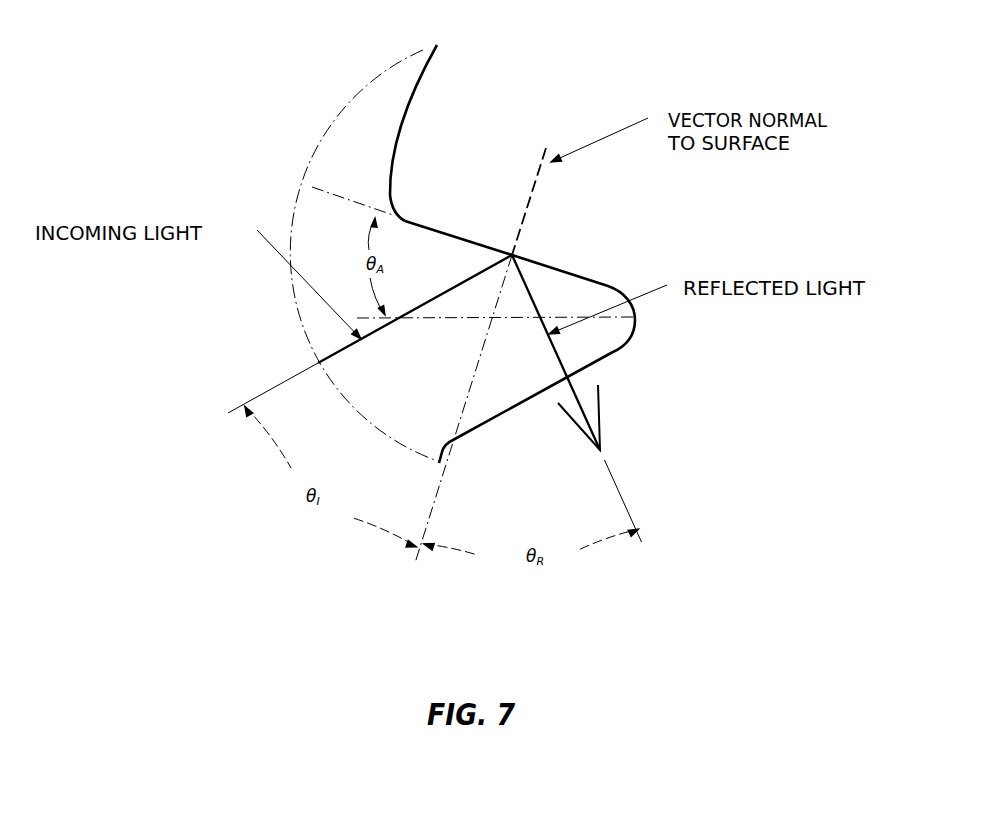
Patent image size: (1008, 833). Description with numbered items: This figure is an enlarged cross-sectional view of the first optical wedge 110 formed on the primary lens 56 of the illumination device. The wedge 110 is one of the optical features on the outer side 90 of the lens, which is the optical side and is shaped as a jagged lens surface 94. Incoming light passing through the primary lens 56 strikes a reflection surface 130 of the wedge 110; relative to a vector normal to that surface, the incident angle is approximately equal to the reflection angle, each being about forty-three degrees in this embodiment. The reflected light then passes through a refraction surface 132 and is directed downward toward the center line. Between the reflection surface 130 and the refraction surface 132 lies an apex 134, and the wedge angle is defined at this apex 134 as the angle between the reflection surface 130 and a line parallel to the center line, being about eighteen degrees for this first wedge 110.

The primary lens 56 is at (383, 136).
The outer side 90 is at (460, 234).
The jagged lens surface 94 is at (499, 249).
The optical wedge 110 is at (632, 225).
The reflection surface 130 is at (577, 264).
The refraction surface 132 is at (606, 358).
The apex 134 is at (633, 315).